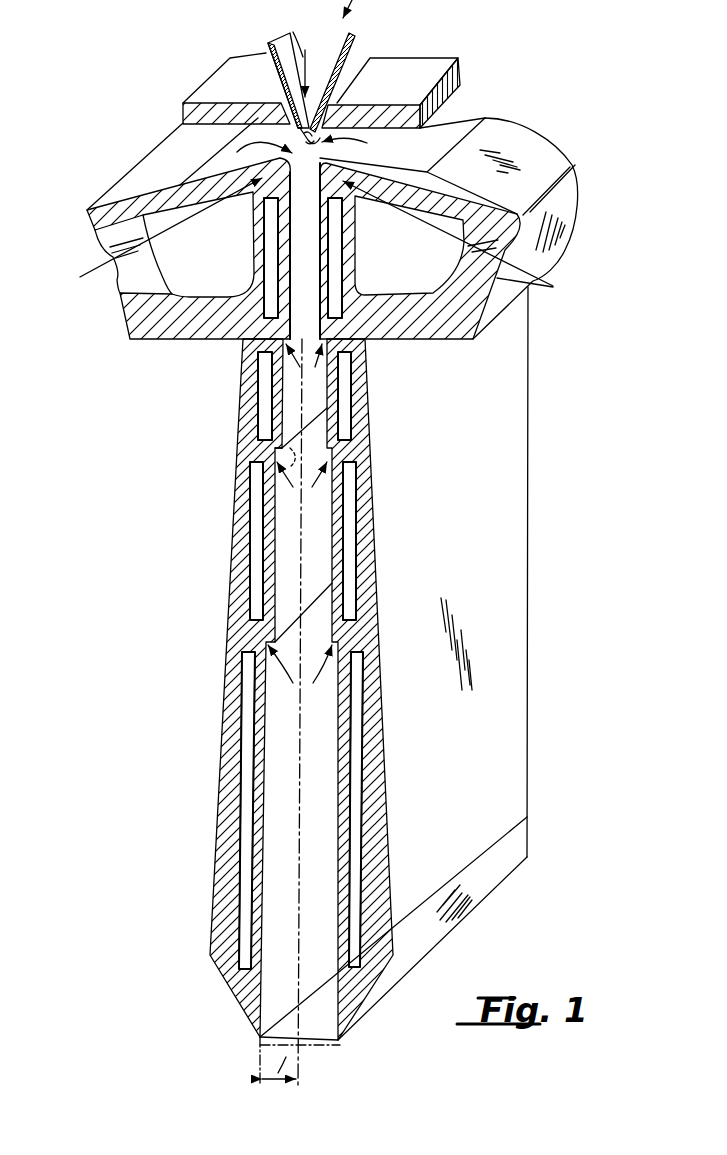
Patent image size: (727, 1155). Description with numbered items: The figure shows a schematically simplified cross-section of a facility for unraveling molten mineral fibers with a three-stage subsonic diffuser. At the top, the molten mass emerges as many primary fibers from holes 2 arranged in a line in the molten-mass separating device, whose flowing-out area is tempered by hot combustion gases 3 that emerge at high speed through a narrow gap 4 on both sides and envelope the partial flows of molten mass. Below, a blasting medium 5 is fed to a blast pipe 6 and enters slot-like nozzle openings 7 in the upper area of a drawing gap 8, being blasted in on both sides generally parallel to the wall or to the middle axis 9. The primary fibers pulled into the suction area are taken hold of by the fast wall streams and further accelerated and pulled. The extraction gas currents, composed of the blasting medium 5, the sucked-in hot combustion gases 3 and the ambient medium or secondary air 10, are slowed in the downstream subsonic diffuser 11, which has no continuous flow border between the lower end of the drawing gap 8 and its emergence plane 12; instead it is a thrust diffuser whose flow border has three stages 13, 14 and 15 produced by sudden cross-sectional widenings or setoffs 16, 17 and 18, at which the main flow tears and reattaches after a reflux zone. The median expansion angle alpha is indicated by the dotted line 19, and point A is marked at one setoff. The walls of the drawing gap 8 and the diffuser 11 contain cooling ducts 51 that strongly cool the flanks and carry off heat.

The holes 2 is at (300, 139).
The hot combustion gases 3 is at (252, 78).
The narrow gap 4 is at (272, 94).
The blasting medium 5 is at (208, 222).
The blast pipe 6 is at (118, 148).
The slot-like nozzle openings 7 is at (293, 177).
The drawing gap 8 is at (315, 285).
The middle axis 9 is at (312, 262).
The ambient medium (secondary air) 10 is at (222, 143).
The subsonic diffuser 11 is at (218, 643).
The emergence plane 12 is at (316, 1050).
The first stage 13 is at (314, 418).
The second stage 14 is at (312, 564).
The third stage 15 is at (312, 898).
The first setoff 16 is at (304, 365).
The second setoff 17 is at (302, 480).
The third setoff 18 is at (300, 678).
The dotted line 19 is at (258, 1060).
The cooling ducts 51 is at (272, 232).
The reference point A is at (275, 450).